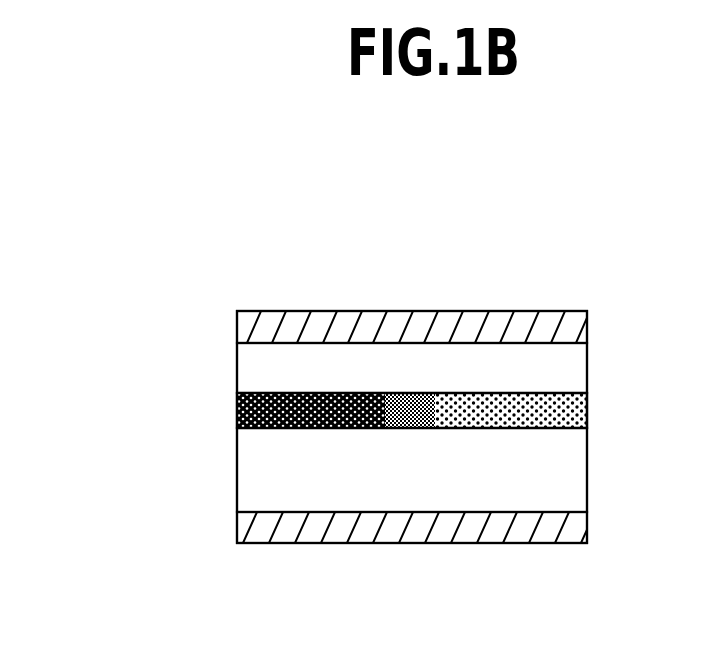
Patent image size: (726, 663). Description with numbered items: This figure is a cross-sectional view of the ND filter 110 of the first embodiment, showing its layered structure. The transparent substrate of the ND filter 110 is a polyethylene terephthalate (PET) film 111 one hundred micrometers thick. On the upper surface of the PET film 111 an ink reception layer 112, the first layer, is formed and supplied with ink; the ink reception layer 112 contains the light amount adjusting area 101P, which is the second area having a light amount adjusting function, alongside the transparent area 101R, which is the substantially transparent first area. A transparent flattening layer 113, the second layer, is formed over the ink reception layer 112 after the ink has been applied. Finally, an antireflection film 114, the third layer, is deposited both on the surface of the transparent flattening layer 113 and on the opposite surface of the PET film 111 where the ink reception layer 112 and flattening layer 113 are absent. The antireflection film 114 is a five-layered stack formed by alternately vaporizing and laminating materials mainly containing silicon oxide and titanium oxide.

The ND filter 110 is at (158, 310).
The polyethylene terephthalate (PET) film 111 is at (588, 463).
The ink reception layer 112 is at (233, 392).
The transparent flattening layer 113 is at (588, 365).
The antireflection film 114 is at (588, 322).
The light amount adjusting area 101P is at (537, 387).
The transparent area 101R is at (588, 408).